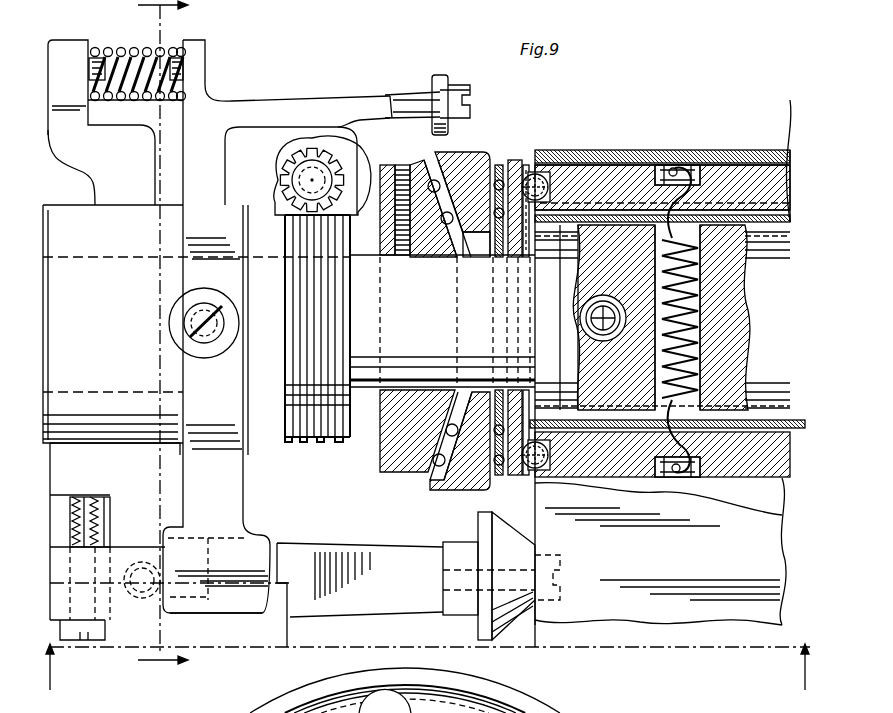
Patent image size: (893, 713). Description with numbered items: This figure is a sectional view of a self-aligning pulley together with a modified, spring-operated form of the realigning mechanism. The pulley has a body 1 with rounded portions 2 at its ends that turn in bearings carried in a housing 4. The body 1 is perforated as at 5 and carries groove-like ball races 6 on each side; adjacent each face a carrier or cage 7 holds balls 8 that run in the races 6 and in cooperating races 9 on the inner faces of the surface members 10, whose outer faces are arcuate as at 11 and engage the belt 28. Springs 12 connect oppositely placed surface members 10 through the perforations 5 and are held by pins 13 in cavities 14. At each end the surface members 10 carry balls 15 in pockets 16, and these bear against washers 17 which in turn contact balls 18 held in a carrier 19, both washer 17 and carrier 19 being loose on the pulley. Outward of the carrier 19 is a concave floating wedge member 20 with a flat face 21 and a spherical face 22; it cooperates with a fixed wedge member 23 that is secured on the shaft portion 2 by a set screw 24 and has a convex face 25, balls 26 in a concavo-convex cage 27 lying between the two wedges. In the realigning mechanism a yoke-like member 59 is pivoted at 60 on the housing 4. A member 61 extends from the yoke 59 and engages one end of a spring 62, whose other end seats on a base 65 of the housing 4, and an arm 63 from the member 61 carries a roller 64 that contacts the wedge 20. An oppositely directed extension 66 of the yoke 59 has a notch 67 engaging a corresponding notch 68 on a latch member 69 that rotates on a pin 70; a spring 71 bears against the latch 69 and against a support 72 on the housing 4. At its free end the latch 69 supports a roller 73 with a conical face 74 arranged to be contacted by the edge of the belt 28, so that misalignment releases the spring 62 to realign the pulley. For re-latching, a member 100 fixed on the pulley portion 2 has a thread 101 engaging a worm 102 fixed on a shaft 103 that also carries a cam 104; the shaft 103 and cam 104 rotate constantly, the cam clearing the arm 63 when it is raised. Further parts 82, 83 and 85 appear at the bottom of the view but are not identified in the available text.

The pulley body 1 is at (772, 285).
The rounded portions 2 is at (372, 388).
The bearing housing 4 is at (55, 215).
The perforations 5 is at (700, 348).
The ball races 6 is at (790, 234).
The carrier or cage 7 is at (773, 150).
The balls 8 is at (612, 166).
The grooves or races 9 is at (788, 204).
The surface members 10 is at (782, 182).
The arcuate outer face 11 is at (422, 678).
The springs 12 is at (700, 322).
The pins 13 is at (675, 165).
The perforations or cavities 14 is at (692, 165).
The balls 15 is at (540, 175).
The cavities or pockets 16 is at (577, 150).
The washers 17 is at (524, 212).
The balls 18 is at (500, 178).
The cage or carrier 19 is at (487, 258).
The concave floating wedge member 20 is at (468, 212).
The flat face 21 is at (505, 190).
The spherical face 22 is at (421, 492).
The fixed wedge member 23 is at (393, 470).
The set screw 24 is at (400, 172).
The convex face 25 is at (470, 432).
The balls 26 is at (468, 170).
The carrier or cage 27 is at (476, 244).
The belt 28 is at (742, 150).
The yoke-like member 59 is at (192, 228).
The pivot 60 is at (188, 326).
The member 61 is at (199, 104).
The spring 62 is at (160, 48).
The arm 63 is at (326, 100).
The roller 64 is at (440, 76).
The base 65 is at (58, 52).
The extension 66 is at (228, 490).
The notch or shoulder 67 is at (210, 538).
The notch or shoulder 68 is at (205, 600).
The latch member 69 is at (308, 560).
The bearing or pin 70 is at (80, 641).
The spring 71 is at (140, 598).
The support or base 72 is at (62, 483).
The roller 73 is at (478, 523).
The conical or inclined face 74 is at (515, 620).
The ring 82 is at (422, 690).
The ring 83 is at (470, 705).
The hub 85 is at (370, 705).
The member 100 is at (350, 346).
The thread 101 is at (340, 326).
The worm 102 is at (284, 168).
The shaft 103 is at (292, 181).
The cam 104 is at (357, 162).